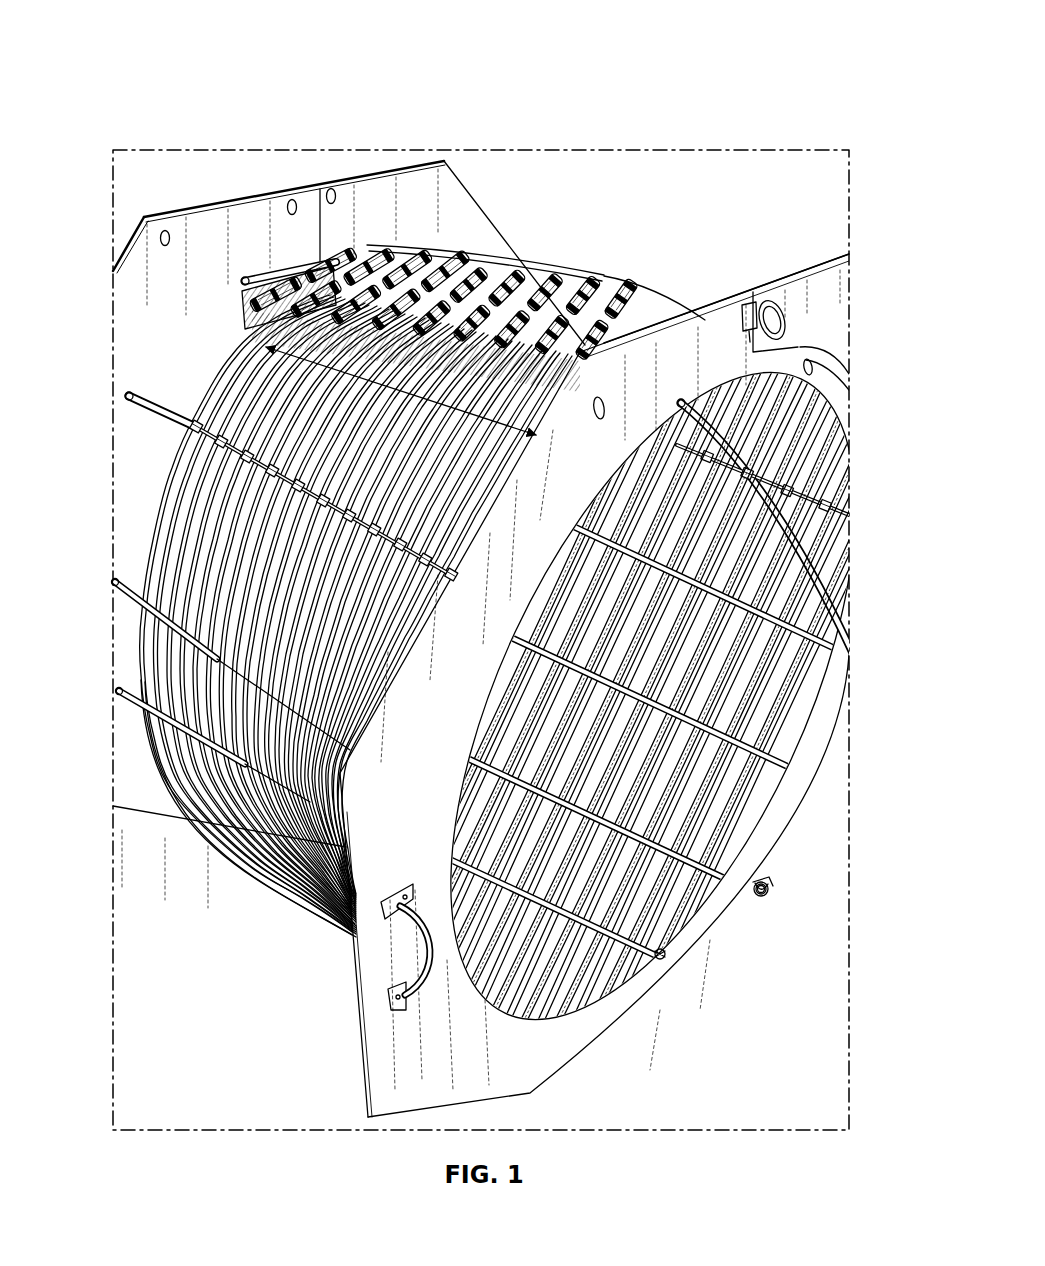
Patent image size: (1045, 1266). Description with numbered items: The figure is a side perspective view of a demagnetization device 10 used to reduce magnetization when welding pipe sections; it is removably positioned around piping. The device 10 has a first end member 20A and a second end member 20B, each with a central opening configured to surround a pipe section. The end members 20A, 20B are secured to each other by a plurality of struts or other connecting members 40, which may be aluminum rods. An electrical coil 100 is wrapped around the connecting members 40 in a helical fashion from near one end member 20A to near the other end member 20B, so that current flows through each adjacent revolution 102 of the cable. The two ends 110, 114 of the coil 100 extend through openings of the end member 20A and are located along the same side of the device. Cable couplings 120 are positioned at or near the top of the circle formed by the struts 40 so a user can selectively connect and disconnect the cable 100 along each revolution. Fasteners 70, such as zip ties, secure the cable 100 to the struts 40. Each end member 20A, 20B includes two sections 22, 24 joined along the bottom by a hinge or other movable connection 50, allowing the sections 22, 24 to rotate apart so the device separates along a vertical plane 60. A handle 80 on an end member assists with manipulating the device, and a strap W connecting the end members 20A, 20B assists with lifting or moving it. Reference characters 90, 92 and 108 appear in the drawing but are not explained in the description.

The demagnetization device 10 is at (97, 38).
The first end member 20A is at (798, 263).
The second end member 20B is at (131, 234).
The section of end member 22 is at (838, 268).
The section of end member 24 is at (375, 885).
The connecting members 40 is at (138, 418).
The hinge or movable connection 50 is at (664, 958).
The vertical plane 60 is at (312, 228).
The fasteners 70 is at (196, 445).
The handle 80 is at (406, 970).
The weld joint 90 is at (776, 893).
The weld 92 is at (774, 912).
The electrical coil 100 is at (606, 270).
The revolution of the cable 102 is at (255, 352).
The cable 108 is at (347, 247).
The coil end 110 is at (846, 377).
The coil end 114 is at (772, 505).
The cable couplings 120 is at (408, 238).
The strap W is at (762, 881).